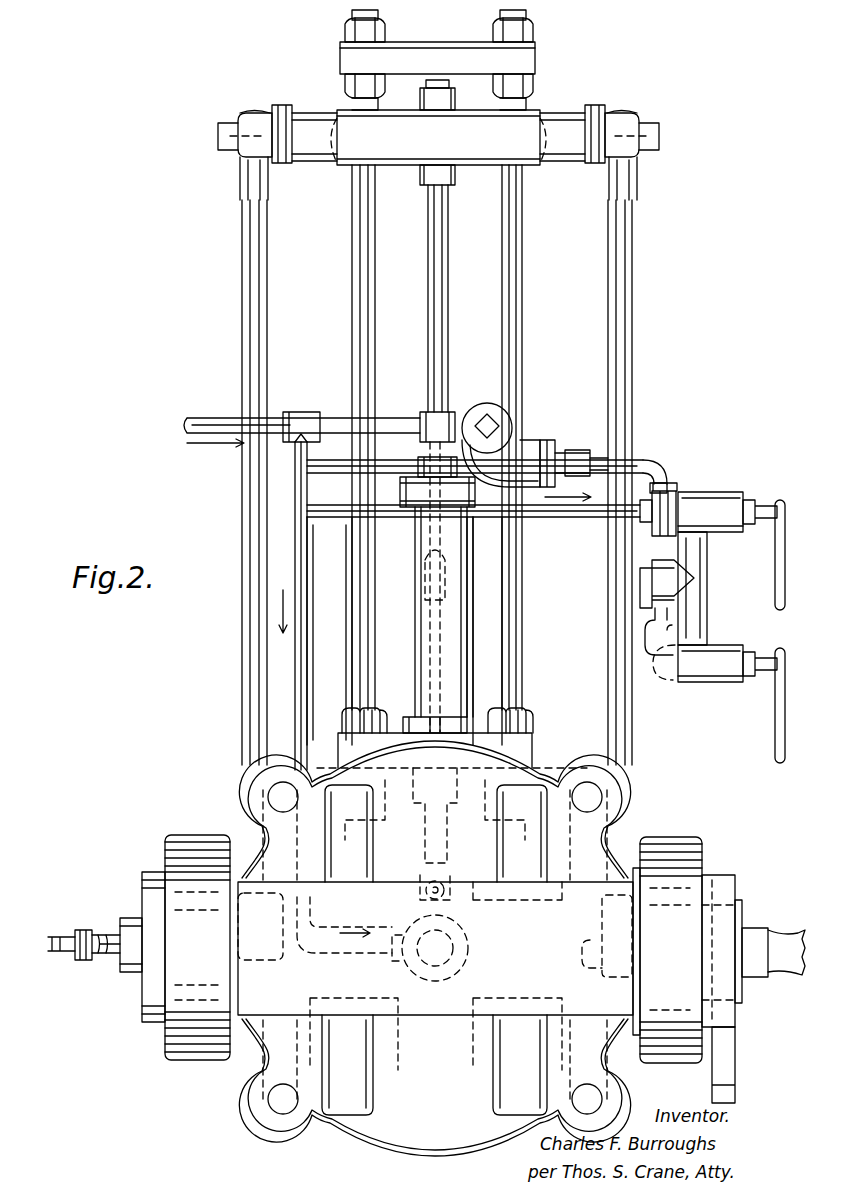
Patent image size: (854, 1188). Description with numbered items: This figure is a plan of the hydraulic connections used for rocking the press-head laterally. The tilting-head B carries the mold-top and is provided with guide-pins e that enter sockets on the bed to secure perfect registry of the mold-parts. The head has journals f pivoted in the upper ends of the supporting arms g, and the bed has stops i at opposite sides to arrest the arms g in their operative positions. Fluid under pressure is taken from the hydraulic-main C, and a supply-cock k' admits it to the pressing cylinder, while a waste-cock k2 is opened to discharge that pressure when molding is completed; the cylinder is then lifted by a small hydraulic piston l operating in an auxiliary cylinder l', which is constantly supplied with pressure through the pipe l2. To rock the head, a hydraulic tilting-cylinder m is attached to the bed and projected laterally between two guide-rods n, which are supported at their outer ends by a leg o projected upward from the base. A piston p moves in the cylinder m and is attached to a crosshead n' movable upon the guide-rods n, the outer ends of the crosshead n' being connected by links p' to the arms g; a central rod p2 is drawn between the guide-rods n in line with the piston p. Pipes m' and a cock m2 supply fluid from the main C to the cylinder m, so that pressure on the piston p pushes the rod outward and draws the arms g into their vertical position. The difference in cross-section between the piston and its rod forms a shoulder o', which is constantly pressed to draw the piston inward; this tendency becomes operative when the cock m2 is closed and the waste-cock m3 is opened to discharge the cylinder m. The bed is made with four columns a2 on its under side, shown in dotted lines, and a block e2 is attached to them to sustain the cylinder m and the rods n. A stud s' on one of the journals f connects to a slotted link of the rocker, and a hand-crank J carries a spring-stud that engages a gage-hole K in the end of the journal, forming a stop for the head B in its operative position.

The leg o is at (414, 60).
The crosshead n' is at (438, 140).
The links p' is at (433, 599).
The guide-rods n is at (434, 449).
The central rod p2 is at (428, 293).
The hydraulic-main C is at (209, 417).
The waste-cock k2 is at (489, 410).
The supply-cock k' is at (574, 445).
The pipes m' is at (486, 602).
The waste-cock m3 is at (718, 535).
The cock m2 is at (719, 647).
The shoulder o' is at (425, 500).
The piston p is at (422, 587).
The pipe l2 is at (307, 632).
The tilting-cylinder m is at (441, 631).
The block e2 is at (520, 748).
The tilting-head B is at (370, 762).
The guide-pins e is at (435, 948).
The supporting arms g is at (190, 836).
The stops i is at (170, 835).
The stud s' is at (95, 935).
The gage-hole K is at (712, 942).
The journals f is at (668, 1010).
The hand-crank J is at (778, 935).
The hydraulic piston l is at (440, 948).
The auxiliary cylinder l' is at (436, 943).
The columns a2 is at (341, 998).